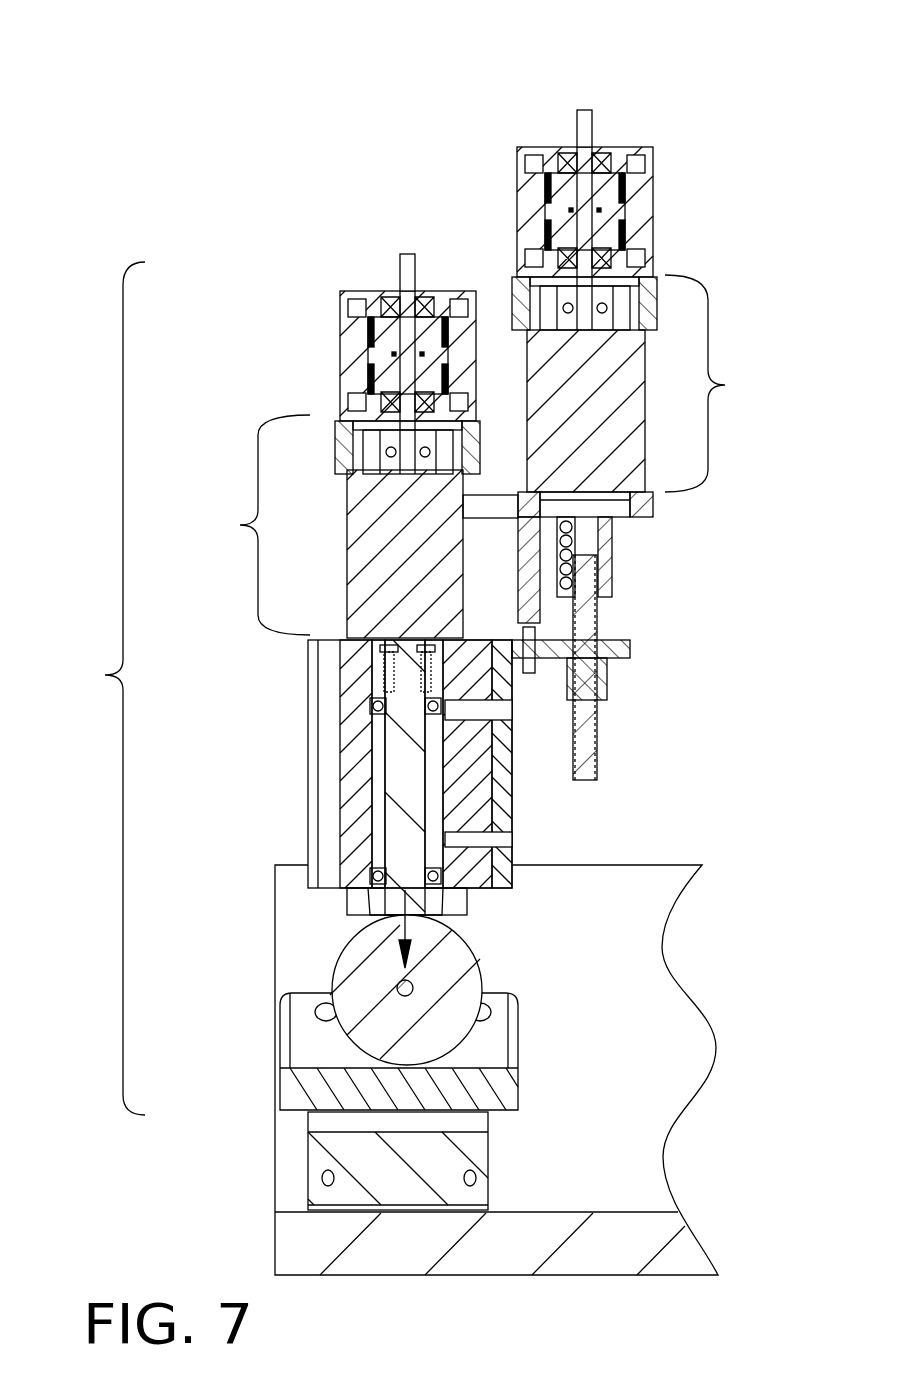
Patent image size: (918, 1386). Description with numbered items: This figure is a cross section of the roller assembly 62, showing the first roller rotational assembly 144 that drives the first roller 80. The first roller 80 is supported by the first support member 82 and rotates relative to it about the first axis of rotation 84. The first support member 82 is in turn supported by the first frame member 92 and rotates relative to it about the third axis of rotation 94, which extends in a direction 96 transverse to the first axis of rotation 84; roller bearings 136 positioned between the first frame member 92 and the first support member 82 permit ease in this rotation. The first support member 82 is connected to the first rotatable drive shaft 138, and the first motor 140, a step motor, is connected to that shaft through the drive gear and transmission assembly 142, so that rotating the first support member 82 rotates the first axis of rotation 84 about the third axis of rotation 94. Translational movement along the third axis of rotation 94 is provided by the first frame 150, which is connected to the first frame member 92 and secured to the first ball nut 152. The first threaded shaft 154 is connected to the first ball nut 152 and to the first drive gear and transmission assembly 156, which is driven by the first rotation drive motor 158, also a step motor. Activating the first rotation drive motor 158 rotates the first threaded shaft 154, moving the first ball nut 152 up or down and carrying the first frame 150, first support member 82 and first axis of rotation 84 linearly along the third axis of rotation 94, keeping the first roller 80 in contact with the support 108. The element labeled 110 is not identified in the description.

The roller assembly 62 is at (730, 98).
The first roller rotational assembly 144 is at (74, 688).
The first rotation drive motor 158 is at (600, 195).
The first drive gear and transmission assembly 156 is at (632, 474).
The first frame 150 is at (572, 690).
The first threaded shaft 154 is at (600, 630).
The first ball nut 152 is at (615, 665).
The first motor 140 is at (400, 355).
The drive gear and transmission assembly 142 is at (303, 526).
The first rotatable drive shaft 138 is at (417, 670).
The first frame member 92 is at (340, 686).
The third axis of rotation 94 is at (440, 790).
The roller bearings 136 is at (375, 708).
The first support member 82 is at (385, 830).
The first roller 80 is at (352, 965).
The direction 96 is at (405, 940).
The first axis of rotation 84 is at (415, 988).
The upper mounting block 110 is at (322, 1052).
The support 108 is at (495, 1052).